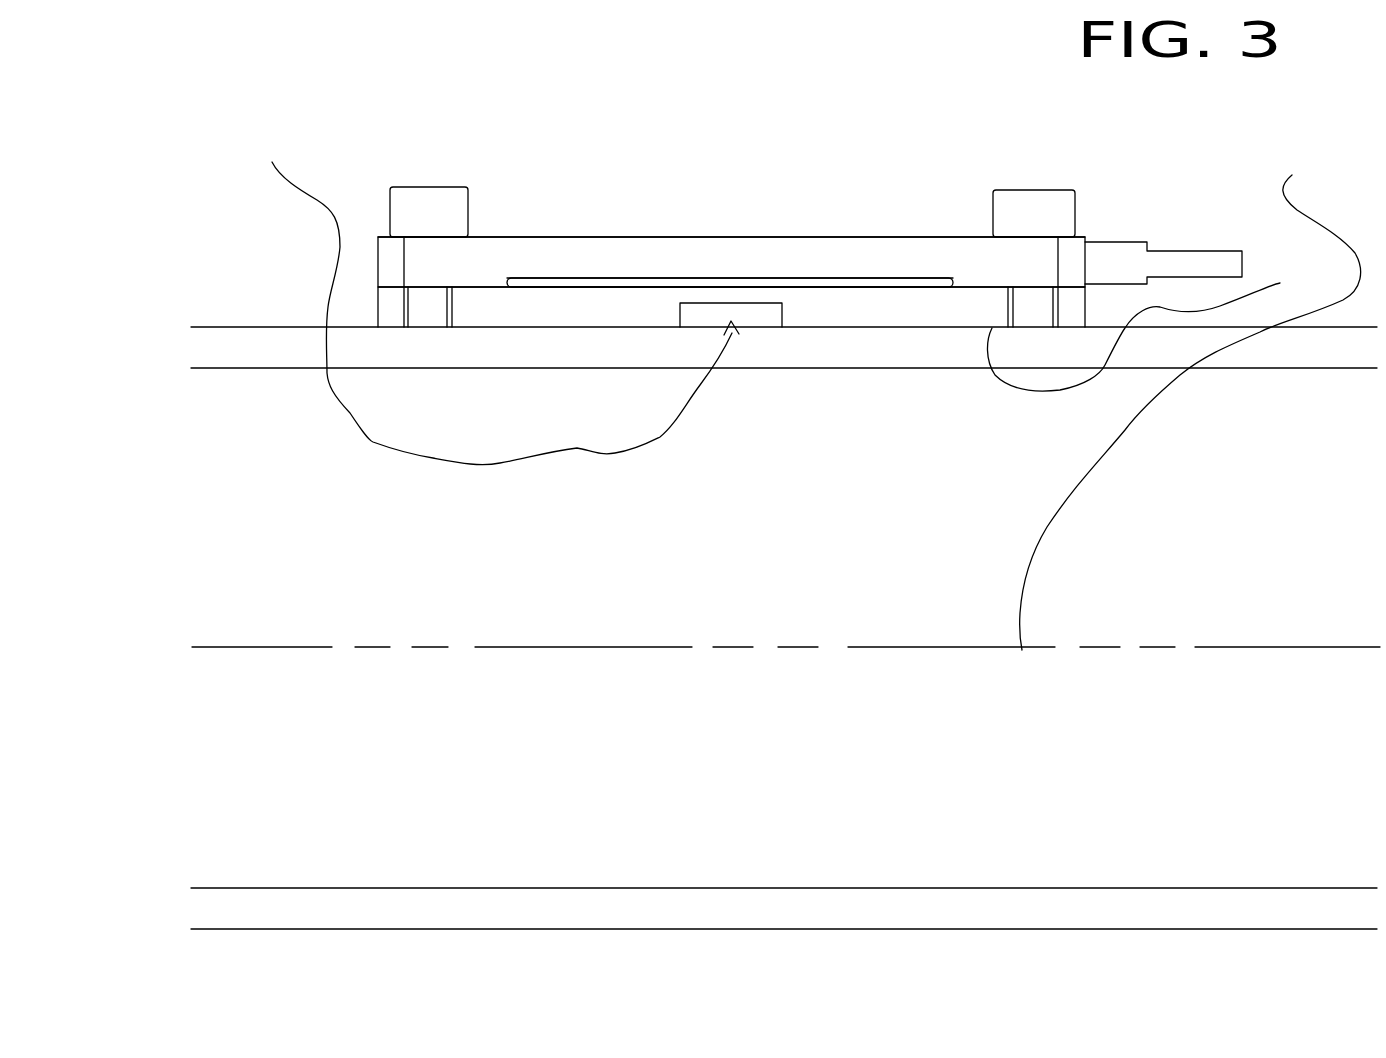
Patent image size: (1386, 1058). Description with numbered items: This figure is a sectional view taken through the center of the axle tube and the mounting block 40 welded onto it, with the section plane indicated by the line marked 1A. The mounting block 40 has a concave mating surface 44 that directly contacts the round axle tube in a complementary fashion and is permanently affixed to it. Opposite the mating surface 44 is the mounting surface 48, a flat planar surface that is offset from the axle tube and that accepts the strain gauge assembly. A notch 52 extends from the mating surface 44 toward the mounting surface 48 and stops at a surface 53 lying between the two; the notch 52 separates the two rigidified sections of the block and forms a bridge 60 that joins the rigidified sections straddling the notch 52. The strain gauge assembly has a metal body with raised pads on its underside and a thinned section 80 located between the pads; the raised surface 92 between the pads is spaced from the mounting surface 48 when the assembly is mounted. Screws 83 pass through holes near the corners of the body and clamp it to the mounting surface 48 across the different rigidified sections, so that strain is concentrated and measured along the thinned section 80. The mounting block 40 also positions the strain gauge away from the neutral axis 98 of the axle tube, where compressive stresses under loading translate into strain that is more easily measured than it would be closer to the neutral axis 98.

The rail / base surface 1A is at (268, 334).
The mounting block 40 is at (910, 307).
The mating surface 44 is at (1157, 323).
The mounting surface 48 is at (527, 294).
The notch 52 is at (504, 294).
The surface 53 is at (750, 310).
The bridge 60 is at (708, 296).
The thinned section 80 is at (830, 252).
The screws 83 is at (437, 197).
The raised surface 92 is at (598, 280).
The neutral axis 98 is at (1190, 392).